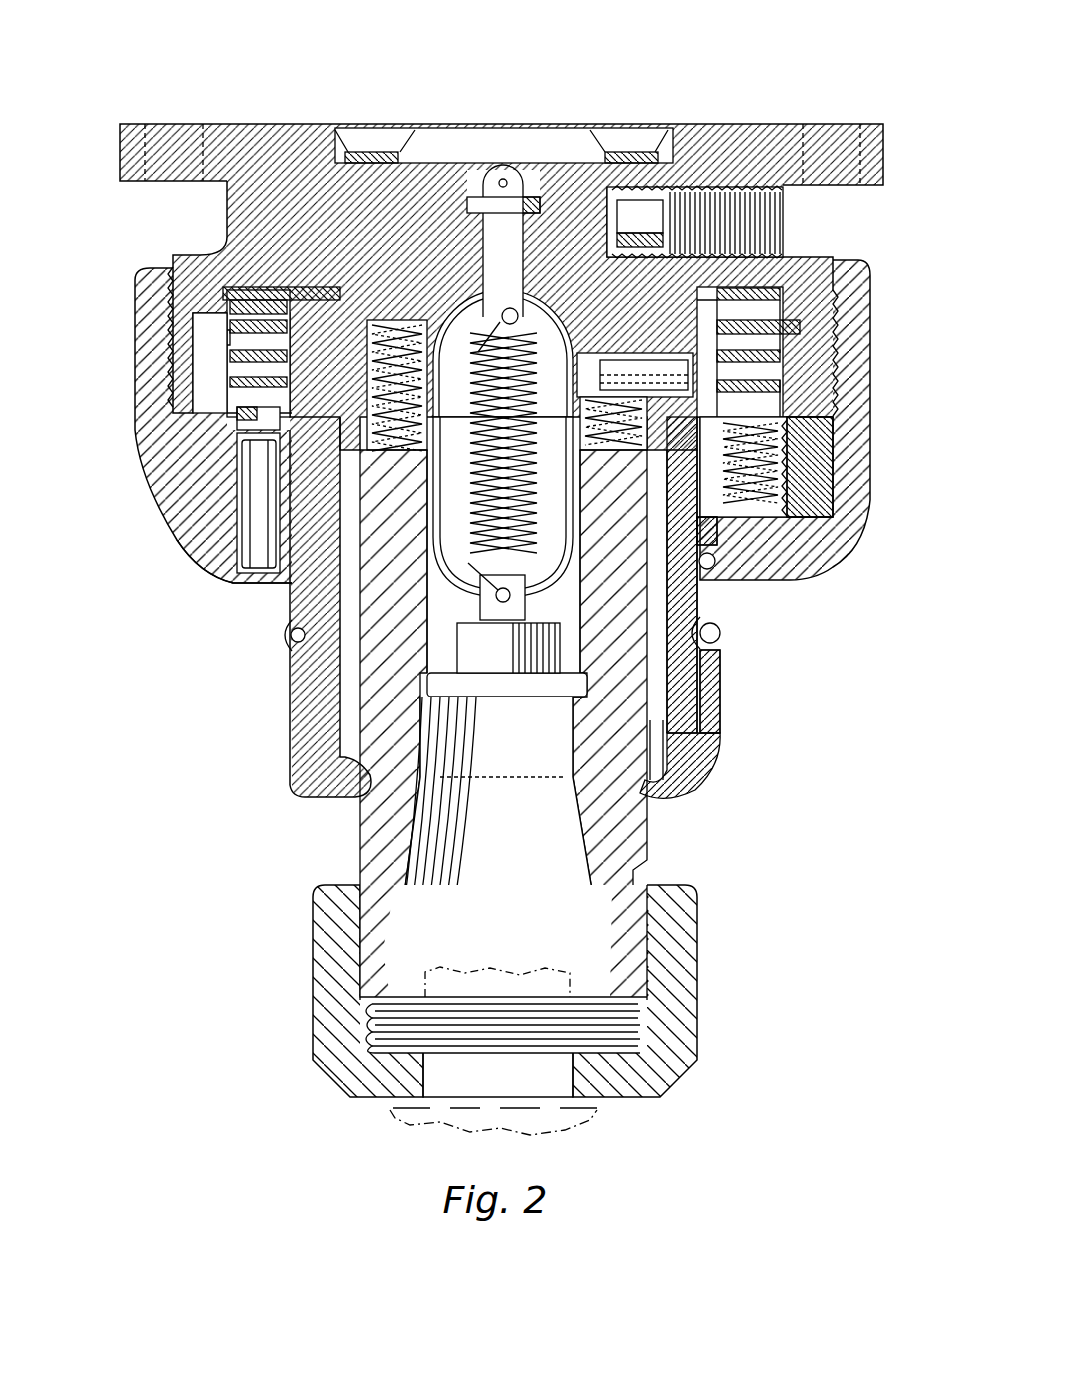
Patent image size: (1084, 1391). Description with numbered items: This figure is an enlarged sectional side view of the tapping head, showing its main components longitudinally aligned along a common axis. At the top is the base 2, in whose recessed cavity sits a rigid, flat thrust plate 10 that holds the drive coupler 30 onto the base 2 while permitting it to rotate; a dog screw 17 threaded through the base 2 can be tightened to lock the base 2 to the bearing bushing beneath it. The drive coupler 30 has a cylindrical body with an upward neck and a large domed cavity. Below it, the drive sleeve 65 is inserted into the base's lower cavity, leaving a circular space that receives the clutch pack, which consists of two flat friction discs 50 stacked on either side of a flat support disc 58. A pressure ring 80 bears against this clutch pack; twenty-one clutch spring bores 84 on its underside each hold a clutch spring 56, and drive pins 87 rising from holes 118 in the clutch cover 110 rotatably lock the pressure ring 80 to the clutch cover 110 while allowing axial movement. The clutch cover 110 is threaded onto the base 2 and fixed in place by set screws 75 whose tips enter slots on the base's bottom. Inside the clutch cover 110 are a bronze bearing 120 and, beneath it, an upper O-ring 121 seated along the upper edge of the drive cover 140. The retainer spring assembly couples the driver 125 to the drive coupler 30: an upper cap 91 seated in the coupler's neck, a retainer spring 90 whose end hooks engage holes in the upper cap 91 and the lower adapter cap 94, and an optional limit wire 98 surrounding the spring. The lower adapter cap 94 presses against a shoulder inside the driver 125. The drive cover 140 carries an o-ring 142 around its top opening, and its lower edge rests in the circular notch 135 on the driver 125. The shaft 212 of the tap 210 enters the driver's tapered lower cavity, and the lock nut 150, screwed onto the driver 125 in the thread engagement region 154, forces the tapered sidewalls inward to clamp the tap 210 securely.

The base 2 is at (122, 110).
The thrust plate 10 is at (441, 150).
The upper cap 91 is at (506, 177).
The drive coupler 30 is at (558, 200).
The dog screw 17 is at (760, 228).
The friction discs 50 is at (770, 305).
The clutch cover 110 is at (872, 330).
The support disc 58 is at (235, 348).
The clutch spring bores 84 is at (255, 415).
The pressure ring 80 is at (762, 408).
The clutch spring 56 is at (760, 442).
The drive pins 87 is at (255, 492).
The set screws 75 is at (772, 468).
The holes 118 is at (240, 545).
The bronze bearing 120 is at (705, 530).
The retainer spring 90 is at (470, 537).
The upper O-ring 121 is at (705, 565).
The limit wire 98 is at (455, 582).
The drive sleeve 65 is at (695, 612).
The lower adapter cap 94 is at (500, 608).
The o-ring 142 is at (710, 636).
The drive cover 140 is at (720, 698).
The circular notch 135 is at (650, 797).
The driver 125 is at (648, 838).
The lock nut 150 is at (697, 928).
The shaft 212 is at (525, 988).
The threads 154 is at (375, 1050).
The tap 210 is at (600, 1130).